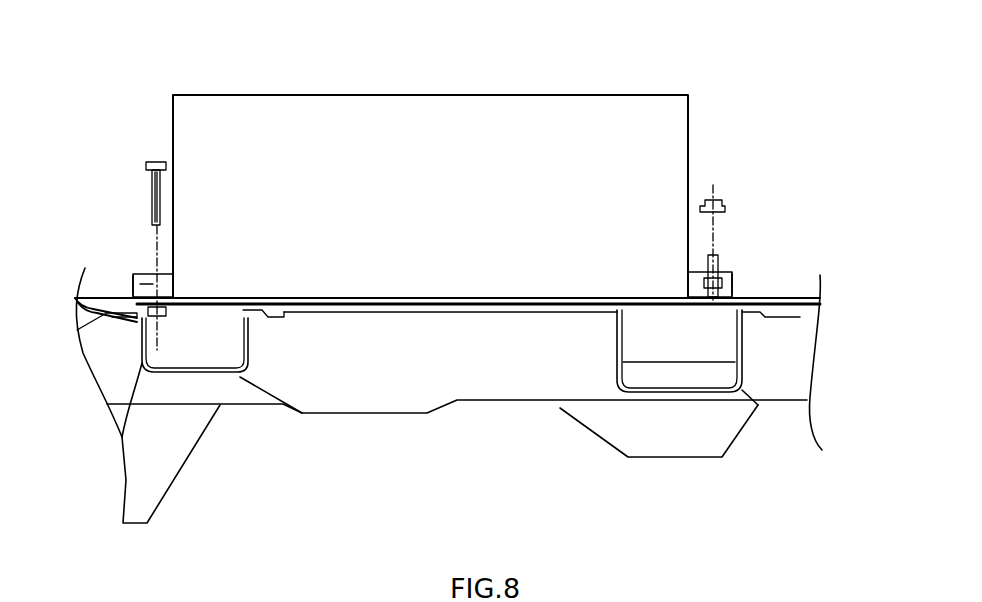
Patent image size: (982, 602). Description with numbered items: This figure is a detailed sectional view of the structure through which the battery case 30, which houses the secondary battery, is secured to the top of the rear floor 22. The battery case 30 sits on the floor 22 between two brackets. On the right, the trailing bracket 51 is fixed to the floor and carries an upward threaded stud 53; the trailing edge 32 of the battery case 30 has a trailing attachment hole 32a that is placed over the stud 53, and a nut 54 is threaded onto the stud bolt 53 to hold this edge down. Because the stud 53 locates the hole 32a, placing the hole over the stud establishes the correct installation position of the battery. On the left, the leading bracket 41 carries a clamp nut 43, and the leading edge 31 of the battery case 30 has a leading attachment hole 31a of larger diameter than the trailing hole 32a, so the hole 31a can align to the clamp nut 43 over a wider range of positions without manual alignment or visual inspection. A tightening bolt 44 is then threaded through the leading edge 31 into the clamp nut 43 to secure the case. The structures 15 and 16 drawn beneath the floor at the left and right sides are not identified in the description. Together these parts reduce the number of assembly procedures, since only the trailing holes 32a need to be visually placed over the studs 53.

The left side rail 15 is at (122, 438).
The right side rail 16 is at (737, 386).
The rear floor 22 is at (808, 303).
The battery case 30 is at (395, 94).
The leading edge 31 is at (143, 273).
The leading attachment holes 31a is at (130, 278).
The trailing edge 32 is at (733, 283).
The trailing attachment holes 32a is at (733, 277).
The leading bracket 41 is at (187, 350).
The clamp nut 43 is at (138, 348).
The tightening bolt 44 is at (153, 161).
The trailing bracket 51 is at (628, 340).
The threaded stud 53 is at (718, 257).
The nut 54 is at (722, 200).